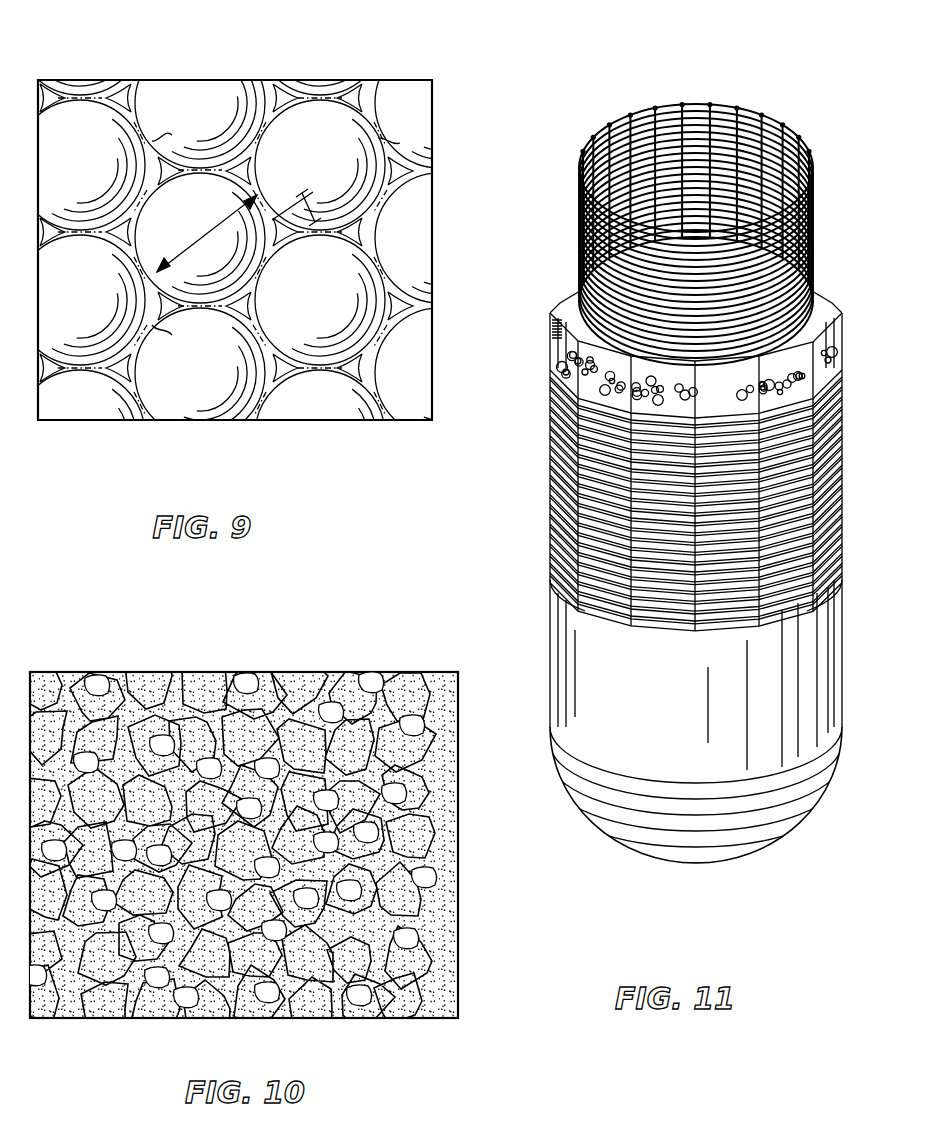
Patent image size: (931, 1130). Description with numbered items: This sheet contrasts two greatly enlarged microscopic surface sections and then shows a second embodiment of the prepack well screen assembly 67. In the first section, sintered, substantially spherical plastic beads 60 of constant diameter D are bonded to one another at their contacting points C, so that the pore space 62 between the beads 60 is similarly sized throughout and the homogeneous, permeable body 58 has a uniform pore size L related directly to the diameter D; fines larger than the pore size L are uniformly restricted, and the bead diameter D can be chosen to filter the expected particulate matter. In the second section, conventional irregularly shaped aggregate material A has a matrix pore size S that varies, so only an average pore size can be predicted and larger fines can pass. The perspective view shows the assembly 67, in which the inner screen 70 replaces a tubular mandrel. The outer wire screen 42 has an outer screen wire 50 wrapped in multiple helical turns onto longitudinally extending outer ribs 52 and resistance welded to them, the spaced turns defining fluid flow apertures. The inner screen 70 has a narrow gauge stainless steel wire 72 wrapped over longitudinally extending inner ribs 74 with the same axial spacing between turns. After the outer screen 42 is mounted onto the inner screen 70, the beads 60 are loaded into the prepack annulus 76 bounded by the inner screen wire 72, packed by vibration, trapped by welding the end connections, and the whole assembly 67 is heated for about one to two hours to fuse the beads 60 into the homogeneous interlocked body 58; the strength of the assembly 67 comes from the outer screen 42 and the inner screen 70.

In FIG. 11, the outer wire screen 42 is at (840, 287).
In FIG. 11, the outer screen wire 50 is at (560, 360).
In FIG. 11, the outer ribs 52 is at (557, 333).
In FIG. 9, the homogeneous permeable body 58 is at (221, 102).
In FIG. 11, the homogeneous permeable body 58 is at (623, 393).
In FIG. 9, the beads 60 is at (395, 112).
In FIG. 11, the beads 60 is at (580, 668).
In FIG. 9, the pore space 62 is at (283, 103).
In FIG. 11, the well screen prepack assembly 67 is at (544, 480).
In FIG. 11, the inner screen 70 is at (724, 209).
In FIG. 11, the inner screen wire 72 is at (707, 103).
In FIG. 11, the inner ribs 74 is at (739, 106).
In FIG. 11, the prepack annulus 76 is at (578, 293).
In FIG. 10, the irregularly shaped aggregate material A is at (185, 690).
In FIG. 10, the matrix pore size S is at (229, 840).
In FIG. 9, the contacting points C is at (283, 234).
In FIG. 9, the bead diameter D is at (188, 253).
In FIG. 9, the uniform pore size L is at (307, 200).